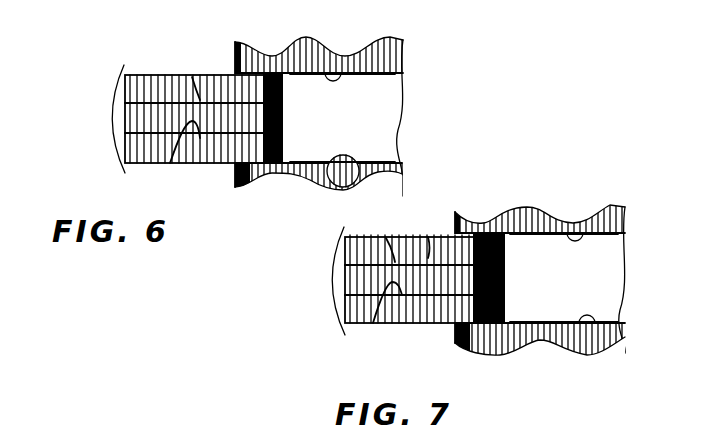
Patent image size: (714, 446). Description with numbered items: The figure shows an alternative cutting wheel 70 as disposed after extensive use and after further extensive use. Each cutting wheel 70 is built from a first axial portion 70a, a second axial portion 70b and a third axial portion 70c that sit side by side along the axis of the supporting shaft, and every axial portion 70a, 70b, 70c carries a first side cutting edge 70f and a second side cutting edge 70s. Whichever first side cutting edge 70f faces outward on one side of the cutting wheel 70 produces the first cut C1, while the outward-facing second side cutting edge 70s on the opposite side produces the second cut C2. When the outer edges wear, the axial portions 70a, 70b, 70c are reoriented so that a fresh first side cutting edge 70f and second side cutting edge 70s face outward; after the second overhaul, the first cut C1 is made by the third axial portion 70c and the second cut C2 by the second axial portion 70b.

In FIG. 6, the cutting wheel 70 is at (93, 113).
In FIG. 7, the cutting wheel 70 is at (310, 280).
In FIG. 6, the first axial portion 70a is at (130, 150).
In FIG. 7, the first axial portion 70a is at (355, 273).
In FIG. 6, the second axial portion 70b is at (143, 97).
In FIG. 7, the second axial portion 70b is at (357, 305).
In FIG. 6, the third axial portion 70c is at (130, 118).
In FIG. 7, the third axial portion 70c is at (355, 252).
In FIG. 6, the first side cutting edge 70f is at (147, 75).
In FIG. 7, the first side cutting edge 70f is at (590, 200).
In FIG. 6, the second side cutting edge 70s is at (283, 133).
In FIG. 7, the second side cutting edge 70s is at (505, 300).
In FIG. 6, the first cut C1 is at (377, 77).
In FIG. 7, the first cut C1 is at (598, 240).
In FIG. 6, the second cut C2 is at (362, 157).
In FIG. 7, the second cut C2 is at (600, 318).